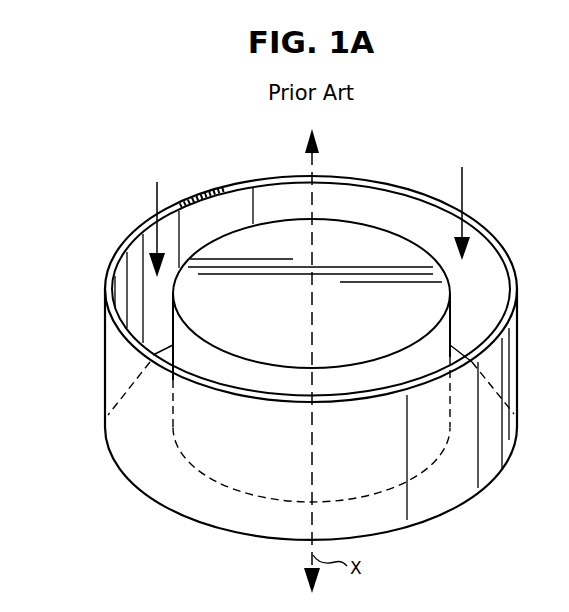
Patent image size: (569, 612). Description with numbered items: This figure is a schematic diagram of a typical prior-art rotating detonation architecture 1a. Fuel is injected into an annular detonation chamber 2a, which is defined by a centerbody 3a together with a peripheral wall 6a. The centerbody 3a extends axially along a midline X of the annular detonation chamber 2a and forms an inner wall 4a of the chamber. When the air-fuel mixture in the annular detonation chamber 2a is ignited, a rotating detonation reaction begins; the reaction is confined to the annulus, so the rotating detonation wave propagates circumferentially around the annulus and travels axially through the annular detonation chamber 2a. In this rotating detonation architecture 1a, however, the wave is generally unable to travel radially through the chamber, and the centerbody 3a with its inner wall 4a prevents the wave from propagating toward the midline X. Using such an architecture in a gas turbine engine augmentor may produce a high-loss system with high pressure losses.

The rotating detonation architecture 1a is at (130, 150).
The annular detonation chamber 2a is at (328, 202).
The centerbody 3a is at (318, 298).
The inner wall 4a is at (433, 351).
The peripheral wall 6a is at (172, 242).